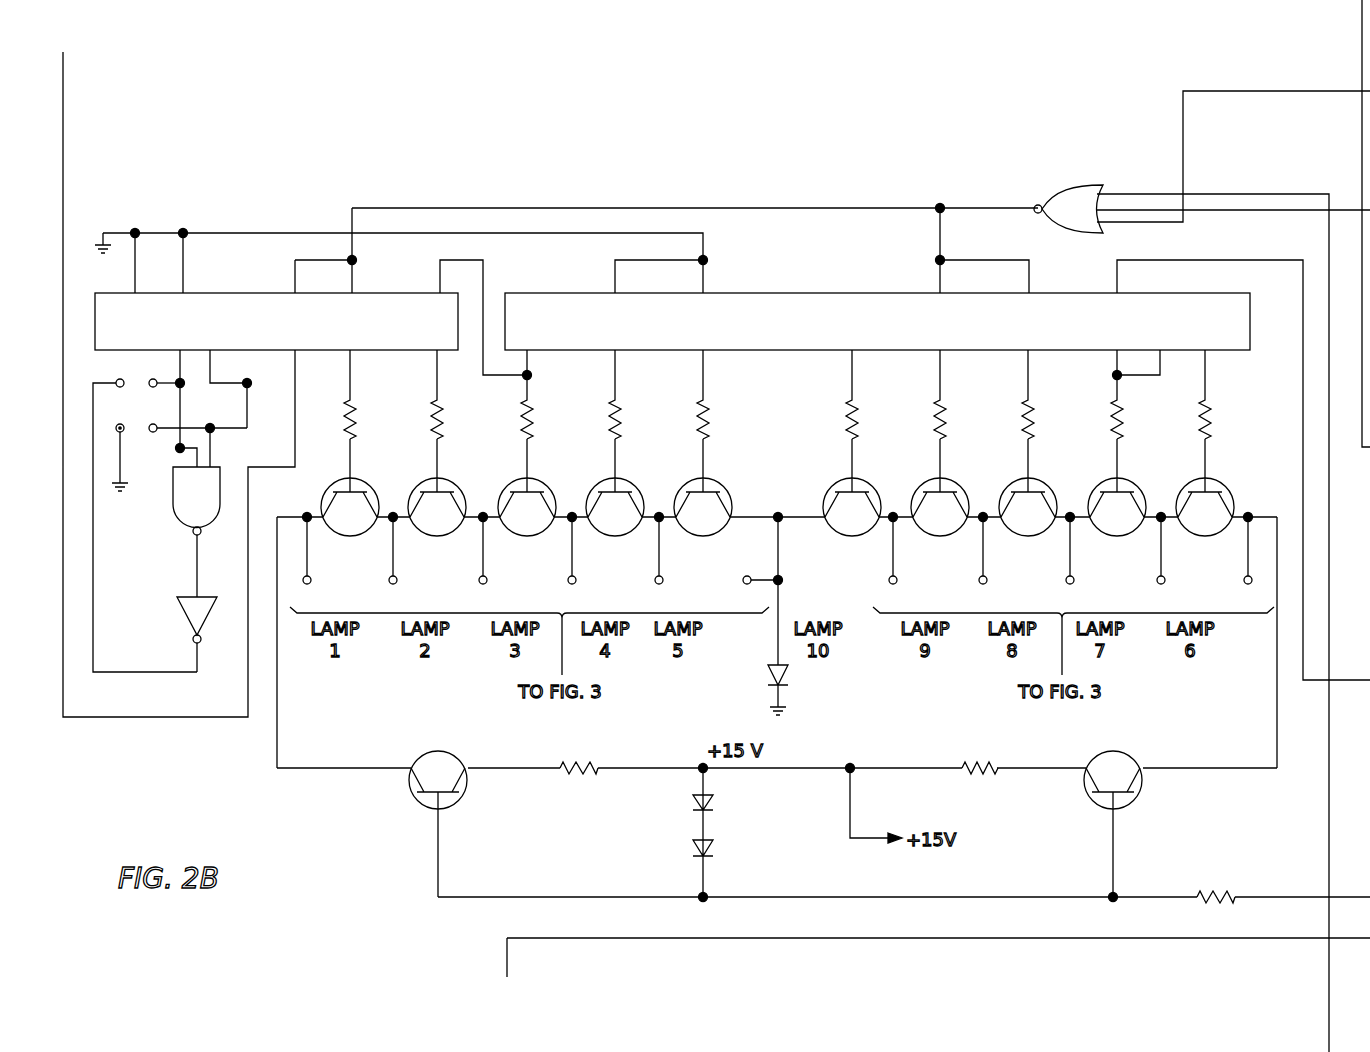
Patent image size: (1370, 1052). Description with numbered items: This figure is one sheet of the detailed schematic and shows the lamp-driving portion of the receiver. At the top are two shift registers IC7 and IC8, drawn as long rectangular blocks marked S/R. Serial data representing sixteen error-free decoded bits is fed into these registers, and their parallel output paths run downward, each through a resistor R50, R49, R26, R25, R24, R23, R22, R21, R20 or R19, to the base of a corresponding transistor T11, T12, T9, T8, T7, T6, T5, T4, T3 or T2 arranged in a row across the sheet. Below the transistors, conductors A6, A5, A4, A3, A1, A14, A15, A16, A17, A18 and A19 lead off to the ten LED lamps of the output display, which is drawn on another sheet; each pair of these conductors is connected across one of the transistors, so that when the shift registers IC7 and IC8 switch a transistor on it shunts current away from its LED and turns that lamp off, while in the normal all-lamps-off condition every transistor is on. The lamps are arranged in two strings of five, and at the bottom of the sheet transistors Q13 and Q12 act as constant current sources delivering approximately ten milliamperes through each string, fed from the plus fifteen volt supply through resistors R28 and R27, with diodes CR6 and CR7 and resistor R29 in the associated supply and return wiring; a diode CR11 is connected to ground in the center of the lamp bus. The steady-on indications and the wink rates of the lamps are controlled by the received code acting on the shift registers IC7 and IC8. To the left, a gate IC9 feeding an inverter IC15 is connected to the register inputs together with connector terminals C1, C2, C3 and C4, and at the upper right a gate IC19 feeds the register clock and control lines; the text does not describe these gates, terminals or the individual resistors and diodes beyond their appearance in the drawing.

The shift register IC7 is at (276, 321).
The shift register IC8 is at (877, 321).
The AND gate IC9 is at (196, 532).
The inverter IC15 is at (165, 634).
The OR gate IC19 is at (1202, 571).
The connector terminal C1 is at (145, 513).
The connector terminal C2 is at (195, 416).
The connector terminal C3 is at (162, 371).
The connector terminal C4 is at (114, 445).
The resistor R50 is at (372, 394).
The resistor R49 is at (459, 394).
The resistor R26 is at (549, 394).
The resistor R25 is at (637, 394).
The resistor R24 is at (725, 394).
The resistor R23 is at (874, 394).
The resistor R22 is at (962, 394).
The resistor R21 is at (1050, 394).
The resistor R20 is at (1139, 394).
The resistor R19 is at (1227, 394).
The transistor T11 is at (352, 487).
The transistor T12 is at (439, 487).
The transistor T9 is at (527, 487).
The transistor T8 is at (615, 487).
The transistor T7 is at (703, 487).
The transistor T6 is at (852, 487).
The transistor T5 is at (940, 487).
The transistor T4 is at (1028, 487).
The transistor T3 is at (1117, 487).
The transistor T2 is at (1205, 487).
The conductor A6 is at (307, 561).
The conductor A5 is at (393, 561).
The conductor A4 is at (483, 561).
The conductor A3 is at (572, 561).
The conductor A1 is at (659, 561).
The conductor A14 is at (757, 589).
The conductor A15 is at (892, 561).
The conductor A16 is at (982, 561).
The conductor A17 is at (1069, 561).
The conductor A18 is at (1160, 561).
The conductor A19 is at (1247, 561).
The diode CR11 is at (803, 690).
The diode CR6 is at (726, 804).
The diode CR7 is at (726, 868).
The transistor Q13 is at (458, 820).
The transistor Q12 is at (1133, 820).
The resistor R28 is at (579, 780).
The resistor R27 is at (979, 780).
The resistor R29 is at (1216, 883).